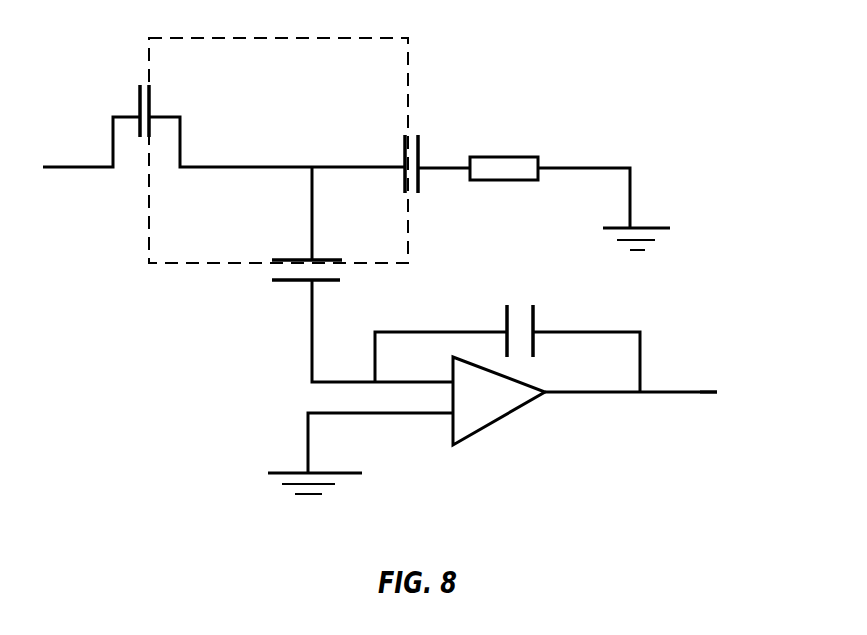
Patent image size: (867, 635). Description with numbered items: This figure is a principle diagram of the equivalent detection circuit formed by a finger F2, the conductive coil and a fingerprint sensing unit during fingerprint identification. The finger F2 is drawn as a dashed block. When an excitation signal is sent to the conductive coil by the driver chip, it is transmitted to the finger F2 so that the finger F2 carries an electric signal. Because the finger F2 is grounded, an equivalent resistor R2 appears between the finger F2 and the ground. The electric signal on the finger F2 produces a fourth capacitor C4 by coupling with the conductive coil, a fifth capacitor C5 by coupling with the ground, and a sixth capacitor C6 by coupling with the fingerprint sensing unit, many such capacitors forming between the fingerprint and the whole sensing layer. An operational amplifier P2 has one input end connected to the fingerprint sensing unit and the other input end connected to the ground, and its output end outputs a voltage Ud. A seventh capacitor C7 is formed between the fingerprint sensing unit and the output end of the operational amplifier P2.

The finger F2 is at (409, 78).
The fourth capacitor C4 is at (121, 104).
The fifth capacitor C5 is at (386, 157).
The equivalent resistor R2 is at (504, 150).
The sixth capacitor C6 is at (318, 289).
The seventh capacitor C7 is at (496, 321).
The operational amplifier P2 is at (499, 416).
The voltage Ud is at (739, 387).